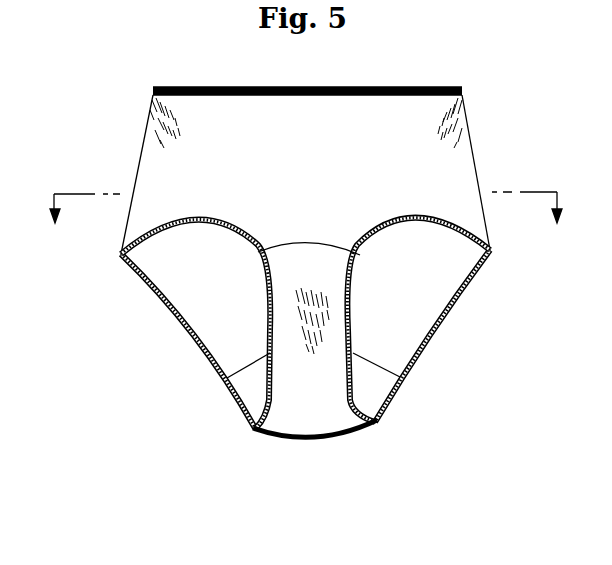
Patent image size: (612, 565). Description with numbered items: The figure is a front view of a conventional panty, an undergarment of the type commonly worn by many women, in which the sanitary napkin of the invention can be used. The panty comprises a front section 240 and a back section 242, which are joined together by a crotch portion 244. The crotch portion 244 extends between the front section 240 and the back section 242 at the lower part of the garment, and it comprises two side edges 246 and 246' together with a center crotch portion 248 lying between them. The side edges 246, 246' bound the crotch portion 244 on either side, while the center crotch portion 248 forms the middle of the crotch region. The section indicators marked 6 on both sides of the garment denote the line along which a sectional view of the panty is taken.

The waistband 240 is at (217, 156).
The leg opening elastic bands 242 is at (200, 281).
The crotch bottom 244 is at (300, 456).
The crotch panel side seam 246 is at (216, 375).
The crotch panel side seam 246' is at (414, 372).
The crotch panel 248 is at (315, 380).
The section line for FIG. 6 is at (305, 222).